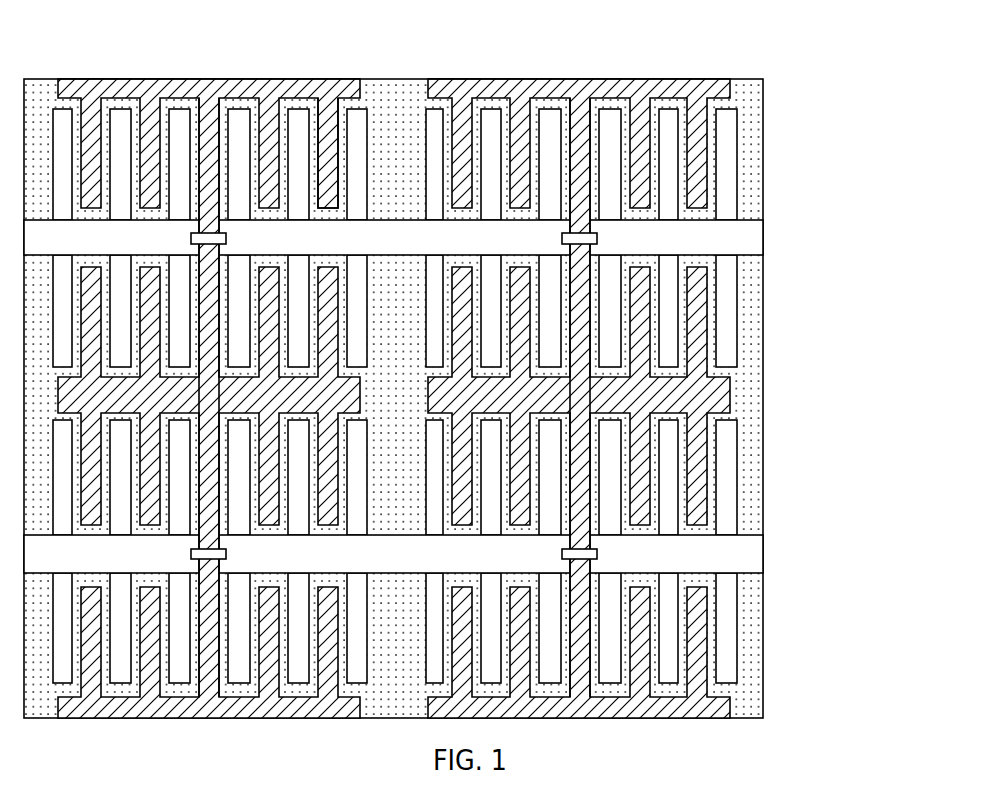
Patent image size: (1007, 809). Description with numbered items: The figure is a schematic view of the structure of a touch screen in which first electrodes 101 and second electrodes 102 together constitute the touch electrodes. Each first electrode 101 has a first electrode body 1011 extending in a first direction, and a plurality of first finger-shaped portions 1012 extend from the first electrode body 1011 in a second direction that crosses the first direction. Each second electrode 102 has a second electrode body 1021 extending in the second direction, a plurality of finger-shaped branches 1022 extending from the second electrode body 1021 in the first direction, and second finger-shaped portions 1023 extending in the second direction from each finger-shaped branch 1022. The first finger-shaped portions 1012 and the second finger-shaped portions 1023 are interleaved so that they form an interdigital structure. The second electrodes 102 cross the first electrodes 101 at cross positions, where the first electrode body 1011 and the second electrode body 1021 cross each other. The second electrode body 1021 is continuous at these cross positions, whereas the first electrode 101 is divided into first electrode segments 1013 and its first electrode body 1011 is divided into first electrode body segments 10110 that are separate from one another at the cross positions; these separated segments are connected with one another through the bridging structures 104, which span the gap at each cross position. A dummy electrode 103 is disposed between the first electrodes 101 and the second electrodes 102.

The first electrode 101 is at (747, 532).
The first electrode body 1011 is at (750, 238).
The first electrode body segment 10110 is at (43, 243).
The first finger-shaped portion 1012 is at (728, 147).
The first electrode segment 1013 is at (117, 247).
The second electrode 102 is at (730, 88).
The second electrode body 1021 is at (578, 113).
The finger-shaped branch 1022 is at (463, 88).
The second finger-shaped portion 1023 is at (323, 113).
The dummy electrode 103 is at (755, 380).
The bridging structure 104 is at (208, 240).